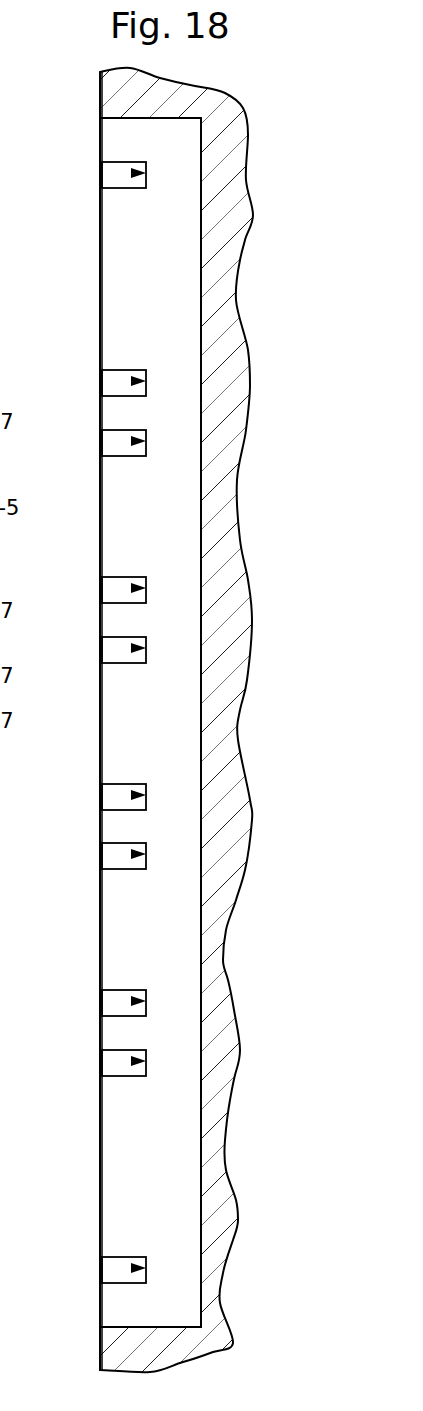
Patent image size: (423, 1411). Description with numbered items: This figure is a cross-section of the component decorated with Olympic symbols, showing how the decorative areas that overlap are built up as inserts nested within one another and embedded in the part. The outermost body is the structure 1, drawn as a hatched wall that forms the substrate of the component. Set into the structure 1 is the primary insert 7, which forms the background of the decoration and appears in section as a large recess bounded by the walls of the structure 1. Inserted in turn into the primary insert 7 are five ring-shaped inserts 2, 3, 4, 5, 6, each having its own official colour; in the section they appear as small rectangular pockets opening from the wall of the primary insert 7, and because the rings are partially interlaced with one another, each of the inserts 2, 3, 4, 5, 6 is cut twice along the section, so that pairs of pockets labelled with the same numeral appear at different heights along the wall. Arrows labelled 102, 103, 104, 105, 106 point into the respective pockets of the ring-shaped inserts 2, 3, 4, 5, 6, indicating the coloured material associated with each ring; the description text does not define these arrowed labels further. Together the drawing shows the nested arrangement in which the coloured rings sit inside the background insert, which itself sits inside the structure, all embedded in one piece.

The structure 1 is at (205, 1343).
The ring-shaped insert 2 is at (140, 1011).
The ring-shaped insert 3 is at (140, 805).
The ring-shaped insert 4 is at (140, 598).
The ring-shaped insert 5 is at (140, 391).
The ring-shaped insert 6 is at (140, 183).
The primary insert 7 is at (172, 263).
The fluid flow 102 is at (132, 1001).
The fluid flow 103 is at (132, 795).
The fluid flow 104 is at (132, 588).
The fluid flow 105 is at (132, 381).
The fluid flow 106 is at (132, 173).